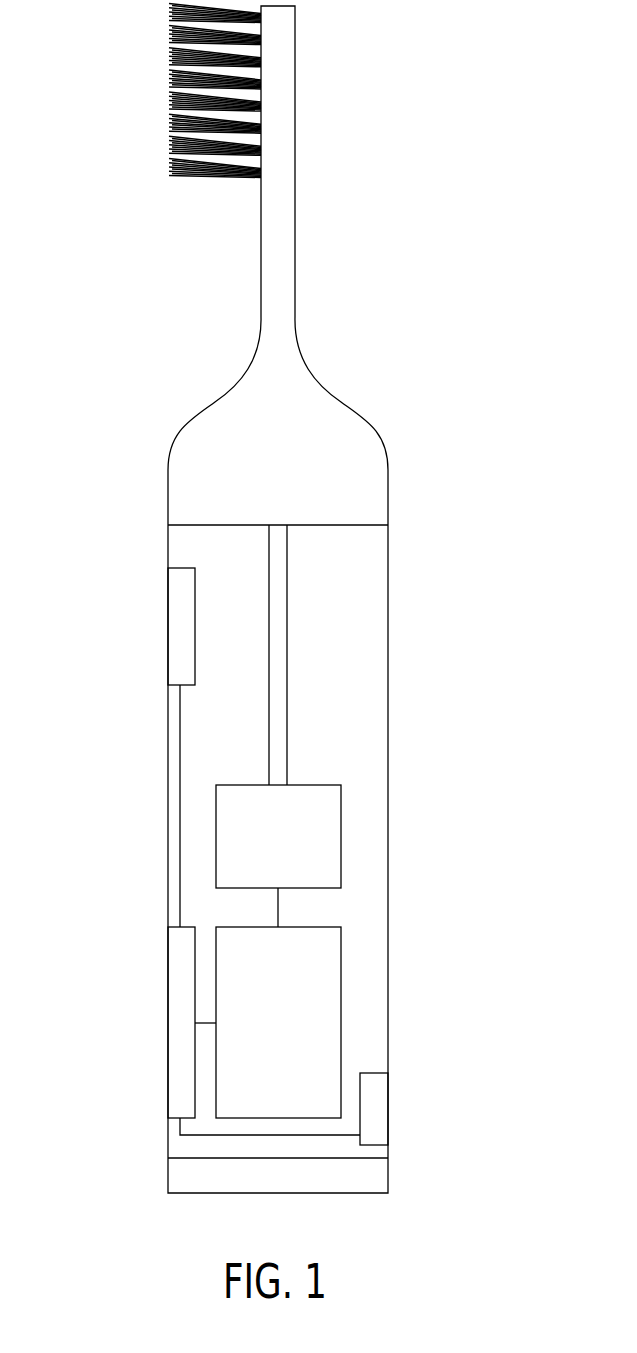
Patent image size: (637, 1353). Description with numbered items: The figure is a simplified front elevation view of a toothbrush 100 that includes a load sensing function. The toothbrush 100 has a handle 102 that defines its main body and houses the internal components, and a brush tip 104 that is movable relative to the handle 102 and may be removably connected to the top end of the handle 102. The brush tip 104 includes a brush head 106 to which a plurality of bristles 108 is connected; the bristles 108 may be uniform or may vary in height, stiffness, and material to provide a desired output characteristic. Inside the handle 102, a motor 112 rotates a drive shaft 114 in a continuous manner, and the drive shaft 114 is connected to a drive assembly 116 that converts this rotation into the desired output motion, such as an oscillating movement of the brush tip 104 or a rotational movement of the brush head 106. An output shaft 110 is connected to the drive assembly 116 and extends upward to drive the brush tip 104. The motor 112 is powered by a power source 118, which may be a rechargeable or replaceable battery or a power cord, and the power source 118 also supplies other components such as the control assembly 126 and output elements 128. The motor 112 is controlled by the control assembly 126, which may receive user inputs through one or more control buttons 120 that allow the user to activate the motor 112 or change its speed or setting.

The toothbrush 100 is at (412, 287).
The handle 102 is at (388, 728).
The brush tip 104 is at (295, 158).
The brush head 106 is at (213, 178).
The bristles 108 is at (170, 90).
The output shaft 110 is at (290, 653).
The motor 112 is at (341, 1022).
The drive shaft 114 is at (278, 908).
The drive assembly 116 is at (341, 837).
The power source 118 is at (222, 1180).
The control buttons 120 is at (178, 635).
The control assembly 126 is at (180, 1052).
The output elements 128 is at (377, 1110).